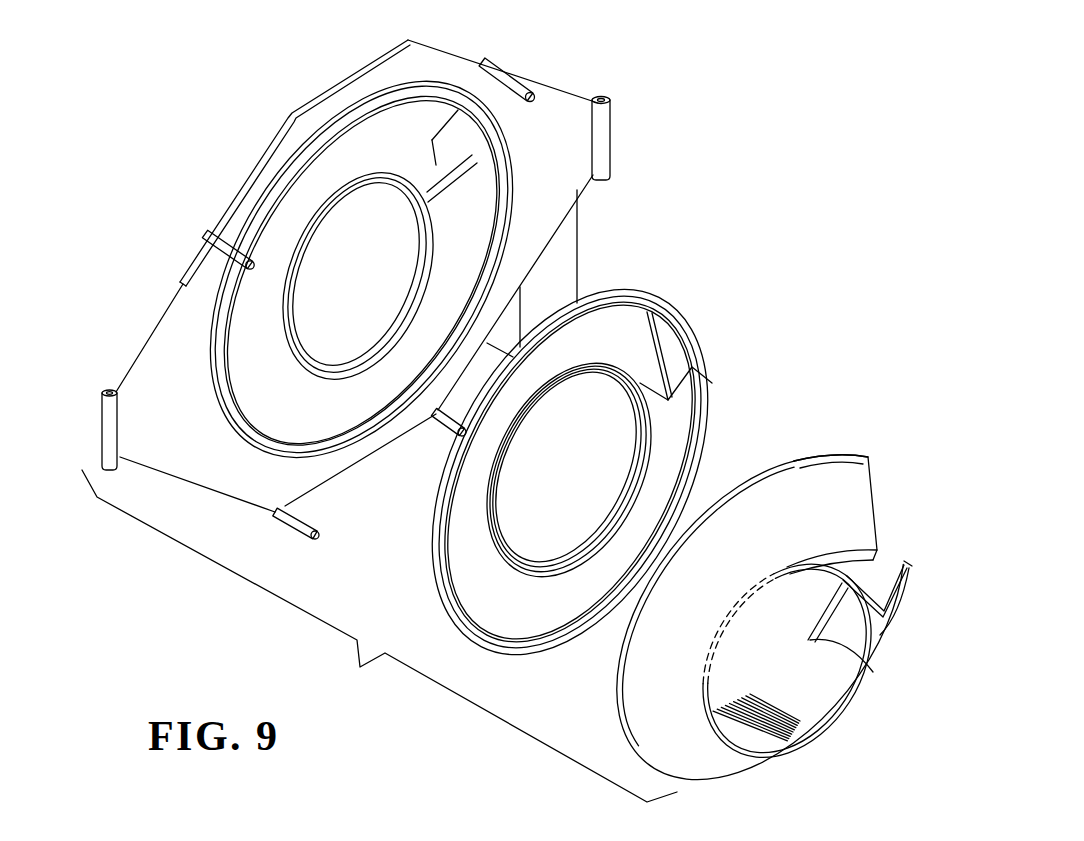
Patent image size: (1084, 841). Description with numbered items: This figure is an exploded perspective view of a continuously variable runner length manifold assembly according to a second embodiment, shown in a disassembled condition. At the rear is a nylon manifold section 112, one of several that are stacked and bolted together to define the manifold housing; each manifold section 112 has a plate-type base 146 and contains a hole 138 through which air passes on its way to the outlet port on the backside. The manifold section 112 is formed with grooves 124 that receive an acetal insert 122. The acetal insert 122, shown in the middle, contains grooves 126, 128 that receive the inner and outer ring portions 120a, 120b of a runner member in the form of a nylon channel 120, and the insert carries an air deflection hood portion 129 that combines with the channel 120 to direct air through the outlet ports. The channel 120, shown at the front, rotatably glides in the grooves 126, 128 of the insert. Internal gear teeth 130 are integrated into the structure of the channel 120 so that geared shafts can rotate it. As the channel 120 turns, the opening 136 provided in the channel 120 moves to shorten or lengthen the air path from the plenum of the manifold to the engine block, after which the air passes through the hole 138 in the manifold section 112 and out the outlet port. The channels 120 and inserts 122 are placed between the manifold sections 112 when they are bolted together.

The manifold section 112 is at (400, 66).
The plate-type base 146 is at (547, 112).
The hole 138 is at (452, 143).
The groove 124 is at (452, 143).
The acetal insert 122 is at (622, 333).
The groove 126 is at (613, 302).
The groove 128 is at (573, 563).
The air deflection hood portion 129 is at (682, 353).
The channel 120 is at (850, 487).
The outer ring portion 120b is at (813, 463).
The inner ring portion 120a is at (868, 672).
The opening 136 is at (890, 557).
The internal gear teeth 130 is at (765, 597).